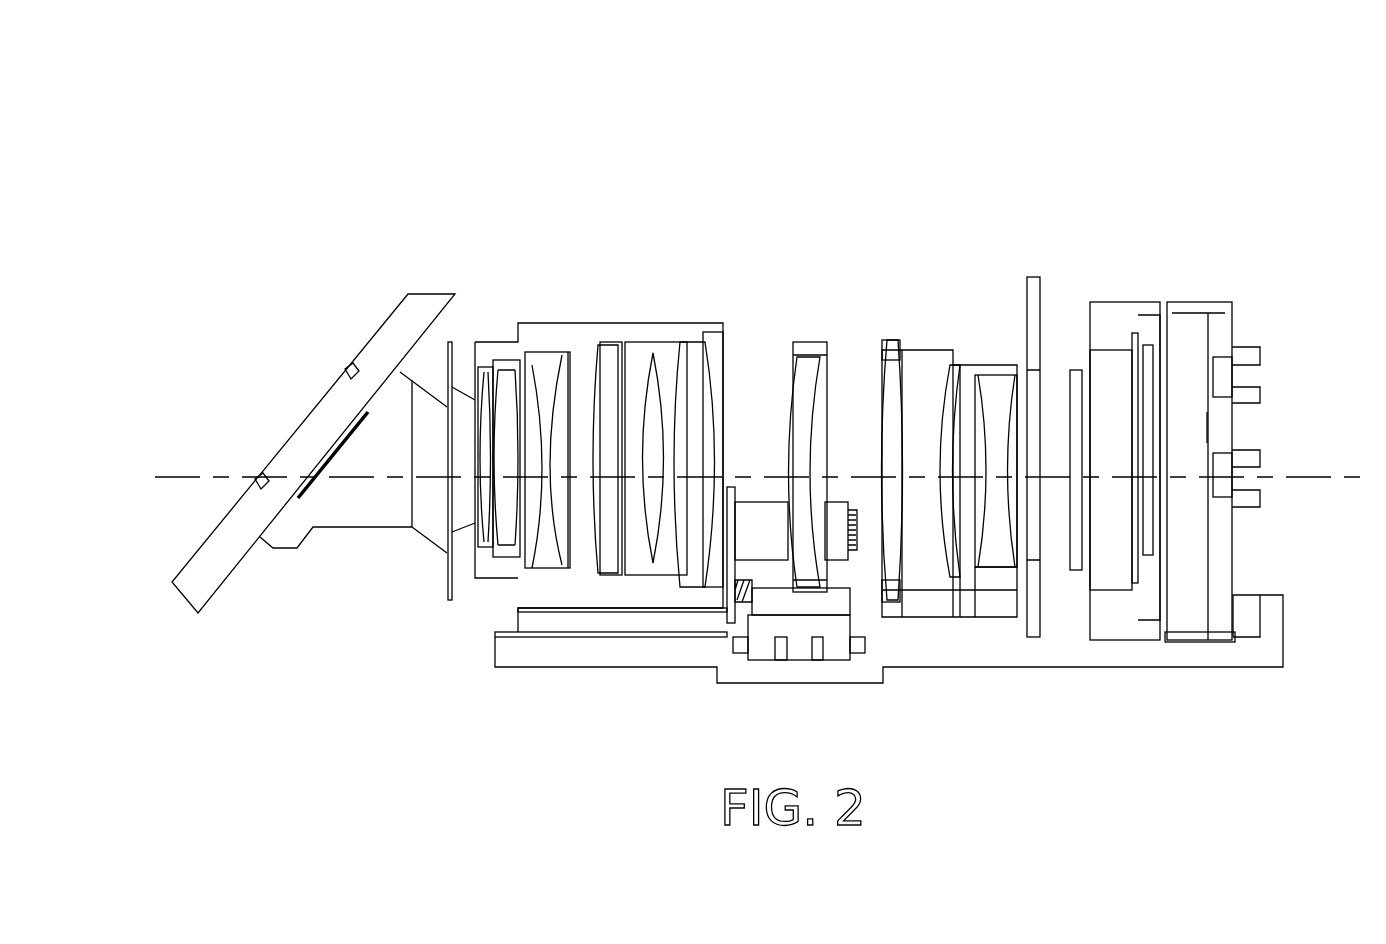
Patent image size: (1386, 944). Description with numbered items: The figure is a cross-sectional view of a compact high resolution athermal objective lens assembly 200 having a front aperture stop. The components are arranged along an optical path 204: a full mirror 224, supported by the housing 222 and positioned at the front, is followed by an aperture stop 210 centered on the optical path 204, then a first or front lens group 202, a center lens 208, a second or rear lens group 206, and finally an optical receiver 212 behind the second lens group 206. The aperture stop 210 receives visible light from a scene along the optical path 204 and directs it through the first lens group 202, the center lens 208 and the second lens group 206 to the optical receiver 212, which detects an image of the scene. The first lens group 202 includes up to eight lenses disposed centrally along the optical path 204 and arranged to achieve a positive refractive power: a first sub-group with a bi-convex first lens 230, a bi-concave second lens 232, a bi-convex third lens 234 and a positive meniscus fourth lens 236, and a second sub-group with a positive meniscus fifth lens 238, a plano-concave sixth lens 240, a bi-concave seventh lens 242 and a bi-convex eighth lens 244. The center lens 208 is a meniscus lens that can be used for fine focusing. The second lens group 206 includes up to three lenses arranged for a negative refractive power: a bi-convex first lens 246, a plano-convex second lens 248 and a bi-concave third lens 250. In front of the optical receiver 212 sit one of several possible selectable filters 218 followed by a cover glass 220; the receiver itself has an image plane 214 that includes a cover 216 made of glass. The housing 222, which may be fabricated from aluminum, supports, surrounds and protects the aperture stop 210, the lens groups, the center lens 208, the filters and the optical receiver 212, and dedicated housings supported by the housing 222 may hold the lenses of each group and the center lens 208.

The objective lens assembly 200 is at (1038, 168).
The first lens group 202 is at (587, 572).
The optical path 204 is at (188, 477).
The second lens group 206 is at (973, 623).
The center lens 208 is at (803, 505).
The aperture stop 210 is at (447, 553).
The optical receiver 212 is at (1192, 332).
The image plane 214 is at (1148, 513).
The cover 216 is at (1137, 533).
The selectable filters 218 is at (1033, 302).
The cover glass 220 is at (1077, 382).
The housing 222 is at (1220, 658).
The full mirror 224 is at (330, 392).
The first lens 230 is at (483, 363).
The second lens 232 is at (507, 367).
The third lens 234 is at (535, 370).
The fourth lens 236 is at (557, 367).
The fifth lens 238 is at (610, 367).
The sixth lens 240 is at (642, 360).
The seventh lens 242 is at (672, 360).
The eighth lens 244 is at (708, 363).
The first lens 246 is at (892, 383).
The second lens 248 is at (950, 382).
The third lens 250 is at (1000, 398).